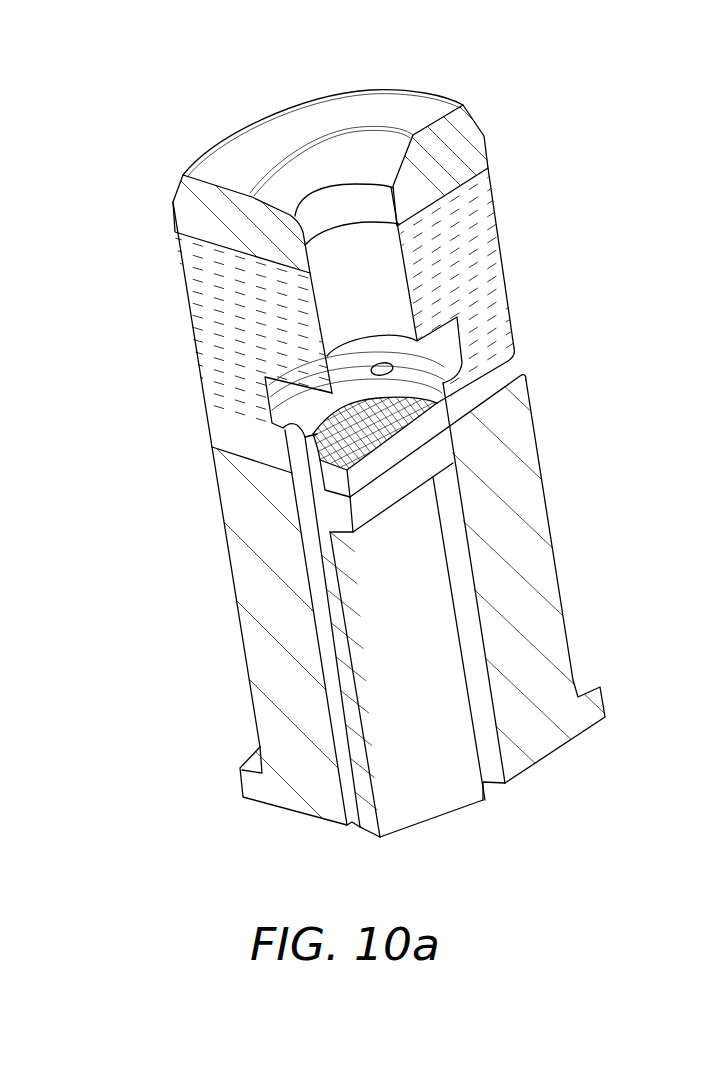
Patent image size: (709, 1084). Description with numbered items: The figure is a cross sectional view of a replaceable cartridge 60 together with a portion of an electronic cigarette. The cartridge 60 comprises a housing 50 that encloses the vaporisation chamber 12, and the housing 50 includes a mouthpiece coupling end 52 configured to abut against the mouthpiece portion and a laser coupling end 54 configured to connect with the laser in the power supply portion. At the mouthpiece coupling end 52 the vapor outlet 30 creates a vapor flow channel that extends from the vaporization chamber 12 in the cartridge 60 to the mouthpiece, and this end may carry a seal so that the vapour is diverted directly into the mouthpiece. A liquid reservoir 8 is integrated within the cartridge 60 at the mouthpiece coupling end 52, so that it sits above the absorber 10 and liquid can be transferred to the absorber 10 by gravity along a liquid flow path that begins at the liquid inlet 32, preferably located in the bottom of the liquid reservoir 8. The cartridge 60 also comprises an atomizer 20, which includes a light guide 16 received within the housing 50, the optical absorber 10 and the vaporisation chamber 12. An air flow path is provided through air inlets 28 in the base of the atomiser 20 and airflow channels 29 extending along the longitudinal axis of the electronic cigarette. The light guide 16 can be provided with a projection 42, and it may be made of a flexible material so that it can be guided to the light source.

The liquid reservoir 8 is at (483, 213).
The absorber 10 is at (390, 498).
The vaporization chamber 12 is at (337, 295).
The light guide 16 is at (420, 676).
The atomizer 20 is at (188, 423).
The air inlets 28 is at (356, 827).
The airflow channels 29 is at (330, 662).
The vapor outlet 30 is at (357, 237).
The liquid inlet 32 is at (507, 370).
The projection 42 is at (500, 797).
The housing 50 is at (555, 506).
The mouthpiece coupling end 52 is at (217, 113).
The laser coupling end 54 is at (286, 836).
The cartridge 60 is at (137, 372).